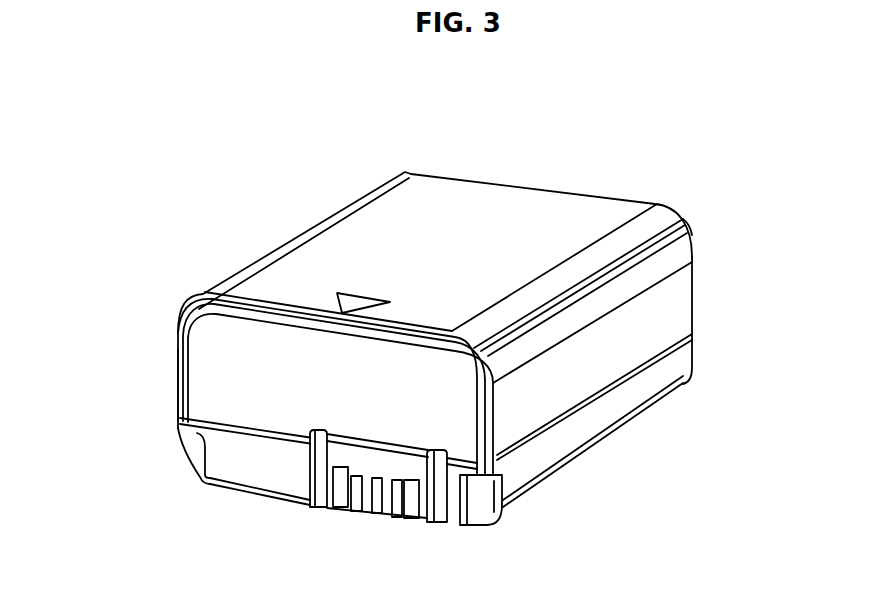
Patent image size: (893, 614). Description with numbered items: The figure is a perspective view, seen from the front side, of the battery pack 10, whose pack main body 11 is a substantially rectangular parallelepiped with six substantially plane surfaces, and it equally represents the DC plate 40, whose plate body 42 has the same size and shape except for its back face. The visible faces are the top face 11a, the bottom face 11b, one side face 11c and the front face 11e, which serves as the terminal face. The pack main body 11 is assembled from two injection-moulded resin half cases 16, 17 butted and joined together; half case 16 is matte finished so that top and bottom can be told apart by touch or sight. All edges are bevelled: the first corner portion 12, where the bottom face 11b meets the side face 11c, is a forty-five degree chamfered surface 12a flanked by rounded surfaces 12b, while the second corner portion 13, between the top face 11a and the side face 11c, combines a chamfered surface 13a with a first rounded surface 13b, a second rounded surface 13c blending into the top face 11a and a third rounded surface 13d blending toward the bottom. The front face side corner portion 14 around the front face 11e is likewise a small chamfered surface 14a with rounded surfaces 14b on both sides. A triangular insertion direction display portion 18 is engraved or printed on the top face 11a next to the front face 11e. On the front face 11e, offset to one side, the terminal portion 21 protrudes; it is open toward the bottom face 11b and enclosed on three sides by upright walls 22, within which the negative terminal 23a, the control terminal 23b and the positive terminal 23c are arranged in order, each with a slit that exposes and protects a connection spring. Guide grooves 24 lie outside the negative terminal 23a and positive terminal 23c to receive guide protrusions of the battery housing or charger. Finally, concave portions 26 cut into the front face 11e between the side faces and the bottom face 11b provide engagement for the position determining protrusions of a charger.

The battery pack 10 is at (405, 348).
The DC plate 40 is at (513, 166).
The pack main body 11 is at (405, 362).
The plate body 42 is at (102, 384).
The top face 11a is at (558, 210).
The bottom face 11b is at (270, 498).
The side face 11c is at (667, 302).
The front face 11e is at (203, 367).
The first corner portion 12 is at (524, 504).
The chamfered surface 12a is at (620, 427).
The rounded surface 12b is at (560, 456).
The second corner portion 13 is at (652, 262).
The chamfered surface 13a is at (653, 237).
The first rounded surface 13b is at (660, 234).
The second rounded surface 13c is at (628, 233).
The third rounded surface 13d is at (682, 243).
The front face side corner portion 14 is at (251, 300).
The chamfered surface 14a is at (400, 326).
The rounded surface 14b is at (440, 333).
The half case 16 is at (203, 430).
The half case 17 is at (200, 403).
The insertion direction display portion 18 is at (343, 293).
The terminal portion 21 is at (381, 428).
The upright walls 22 is at (320, 432).
The negative terminal 23a is at (350, 512).
The control terminal 23b is at (368, 515).
The positive terminal 23c is at (393, 519).
The guide groove 24 is at (343, 502).
The concave portion 26 is at (187, 453).